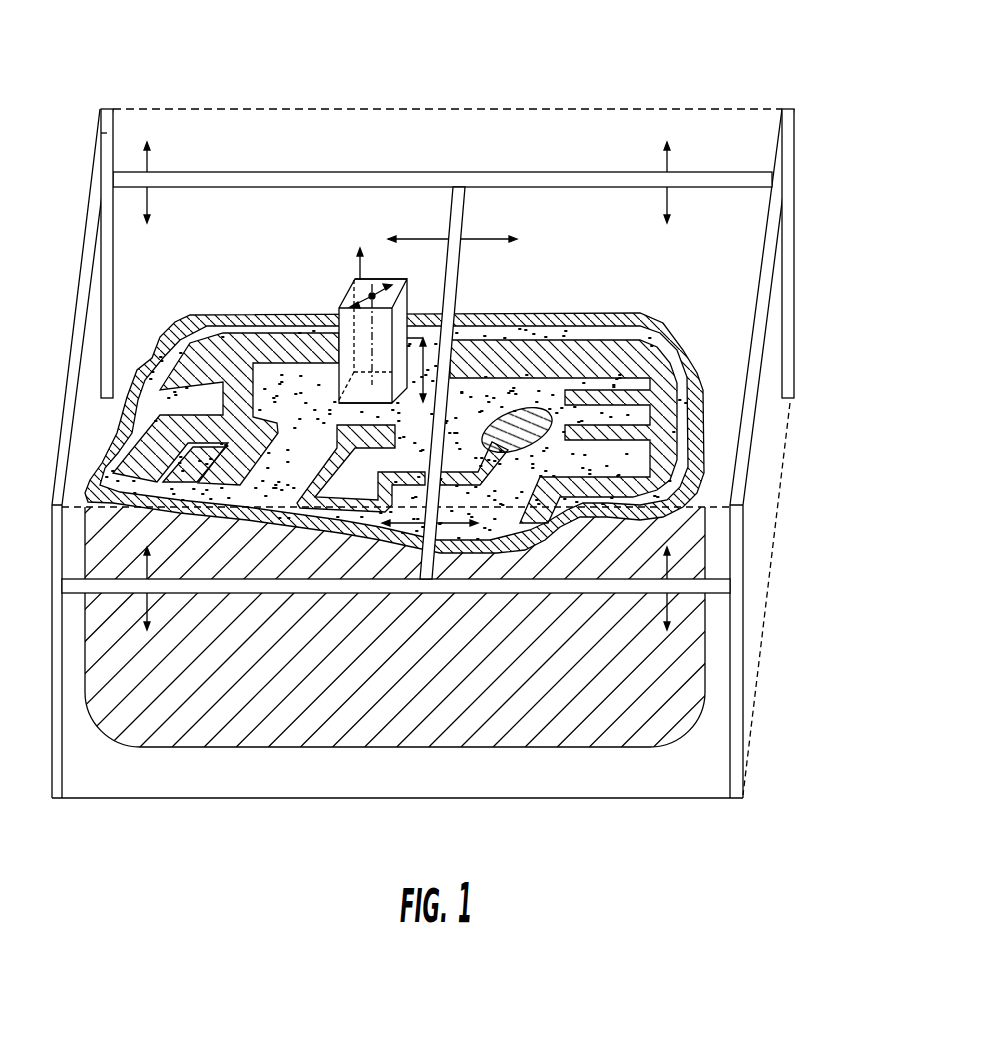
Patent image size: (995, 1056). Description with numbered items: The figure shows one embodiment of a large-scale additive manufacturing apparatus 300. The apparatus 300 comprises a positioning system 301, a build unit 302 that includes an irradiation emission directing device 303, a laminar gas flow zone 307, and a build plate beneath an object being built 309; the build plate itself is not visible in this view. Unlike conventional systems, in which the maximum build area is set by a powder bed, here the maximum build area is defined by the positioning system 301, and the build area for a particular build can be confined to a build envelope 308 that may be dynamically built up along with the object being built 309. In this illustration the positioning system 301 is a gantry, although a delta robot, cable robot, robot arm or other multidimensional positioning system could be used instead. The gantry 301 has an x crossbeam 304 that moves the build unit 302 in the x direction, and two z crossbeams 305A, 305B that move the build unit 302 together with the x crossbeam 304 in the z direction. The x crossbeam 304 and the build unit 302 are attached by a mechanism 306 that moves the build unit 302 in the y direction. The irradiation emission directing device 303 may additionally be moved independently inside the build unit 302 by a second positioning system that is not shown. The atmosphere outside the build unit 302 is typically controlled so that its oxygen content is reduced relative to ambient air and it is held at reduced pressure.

The large-scale additive manufacturing apparatus 300 is at (473, 94).
The positioning system 301 is at (104, 113).
The build unit 302 is at (357, 277).
The irradiation emission directing device 303 is at (400, 277).
The x crossbeam 304 is at (460, 270).
The z crossbeam 305A is at (235, 172).
The z crossbeam 305B is at (222, 593).
The mechanism 306 is at (428, 372).
The laminar gas flow zone 307 is at (365, 408).
The build envelope 308 is at (663, 322).
The object being built 309 is at (680, 406).